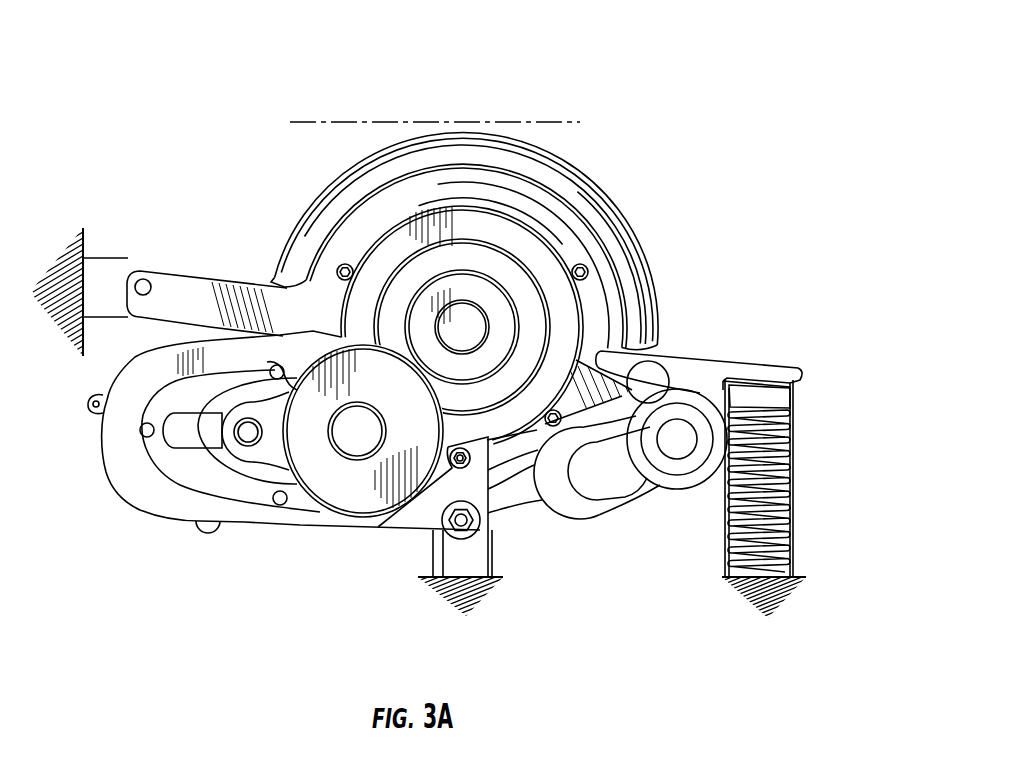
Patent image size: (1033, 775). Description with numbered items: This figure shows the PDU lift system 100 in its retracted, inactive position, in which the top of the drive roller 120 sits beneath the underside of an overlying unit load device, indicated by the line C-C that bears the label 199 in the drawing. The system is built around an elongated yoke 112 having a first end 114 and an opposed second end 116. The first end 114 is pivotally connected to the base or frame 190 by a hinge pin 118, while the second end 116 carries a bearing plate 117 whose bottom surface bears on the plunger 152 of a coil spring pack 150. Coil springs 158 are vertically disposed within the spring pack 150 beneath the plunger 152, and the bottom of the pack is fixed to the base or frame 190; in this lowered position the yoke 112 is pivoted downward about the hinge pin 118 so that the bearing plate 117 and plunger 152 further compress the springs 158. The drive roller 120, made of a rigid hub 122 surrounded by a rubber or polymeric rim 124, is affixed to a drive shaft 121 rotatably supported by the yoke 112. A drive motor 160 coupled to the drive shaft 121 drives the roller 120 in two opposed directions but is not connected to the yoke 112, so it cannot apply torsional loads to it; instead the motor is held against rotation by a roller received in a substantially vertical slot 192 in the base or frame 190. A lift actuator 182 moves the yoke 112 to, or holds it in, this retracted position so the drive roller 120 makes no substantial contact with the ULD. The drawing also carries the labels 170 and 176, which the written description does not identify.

The PDU lift system 100 is at (620, 60).
The section line C-C 199 is at (372, 122).
The rubber or polymeric rim 124 is at (358, 161).
The drive roller 120 is at (485, 287).
The drive shaft 121 is at (470, 328).
The bearing plate 117 is at (750, 357).
The second end 116 is at (785, 365).
The plunger 152 is at (782, 398).
The coil springs 158 is at (790, 463).
The coil spring pack 150 is at (796, 478).
The base or frame 190 is at (76, 241).
The lift actuator 182 is at (625, 510).
The hub 122 is at (521, 512).
The mounting bracket 170 is at (490, 533).
The mounting bolt 176 is at (455, 526).
The substantially vertical slot 192 is at (460, 566).
The drive motor 160 is at (270, 528).
The first end 114 is at (133, 319).
The elongated yoke 112 is at (207, 282).
The hinge pin 118 is at (143, 279).